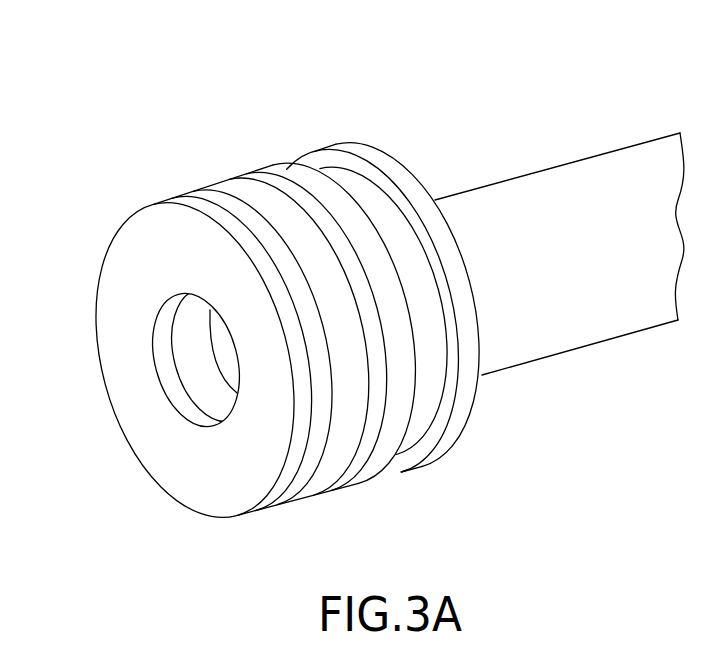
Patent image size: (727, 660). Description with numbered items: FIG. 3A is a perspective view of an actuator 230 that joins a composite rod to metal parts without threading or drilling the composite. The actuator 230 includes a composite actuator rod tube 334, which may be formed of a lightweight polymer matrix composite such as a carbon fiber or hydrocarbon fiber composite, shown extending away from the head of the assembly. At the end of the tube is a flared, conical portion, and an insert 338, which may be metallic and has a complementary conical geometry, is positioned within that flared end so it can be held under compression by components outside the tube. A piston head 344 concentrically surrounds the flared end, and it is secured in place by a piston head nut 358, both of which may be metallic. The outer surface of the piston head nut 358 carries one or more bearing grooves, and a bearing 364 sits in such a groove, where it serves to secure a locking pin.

The actuator 230 is at (497, 110).
The composite actuator rod tube 334 is at (602, 347).
The insert 338 is at (197, 374).
The piston head 344 is at (379, 162).
The piston head nut 358 is at (132, 235).
The bearing 364 is at (235, 186).